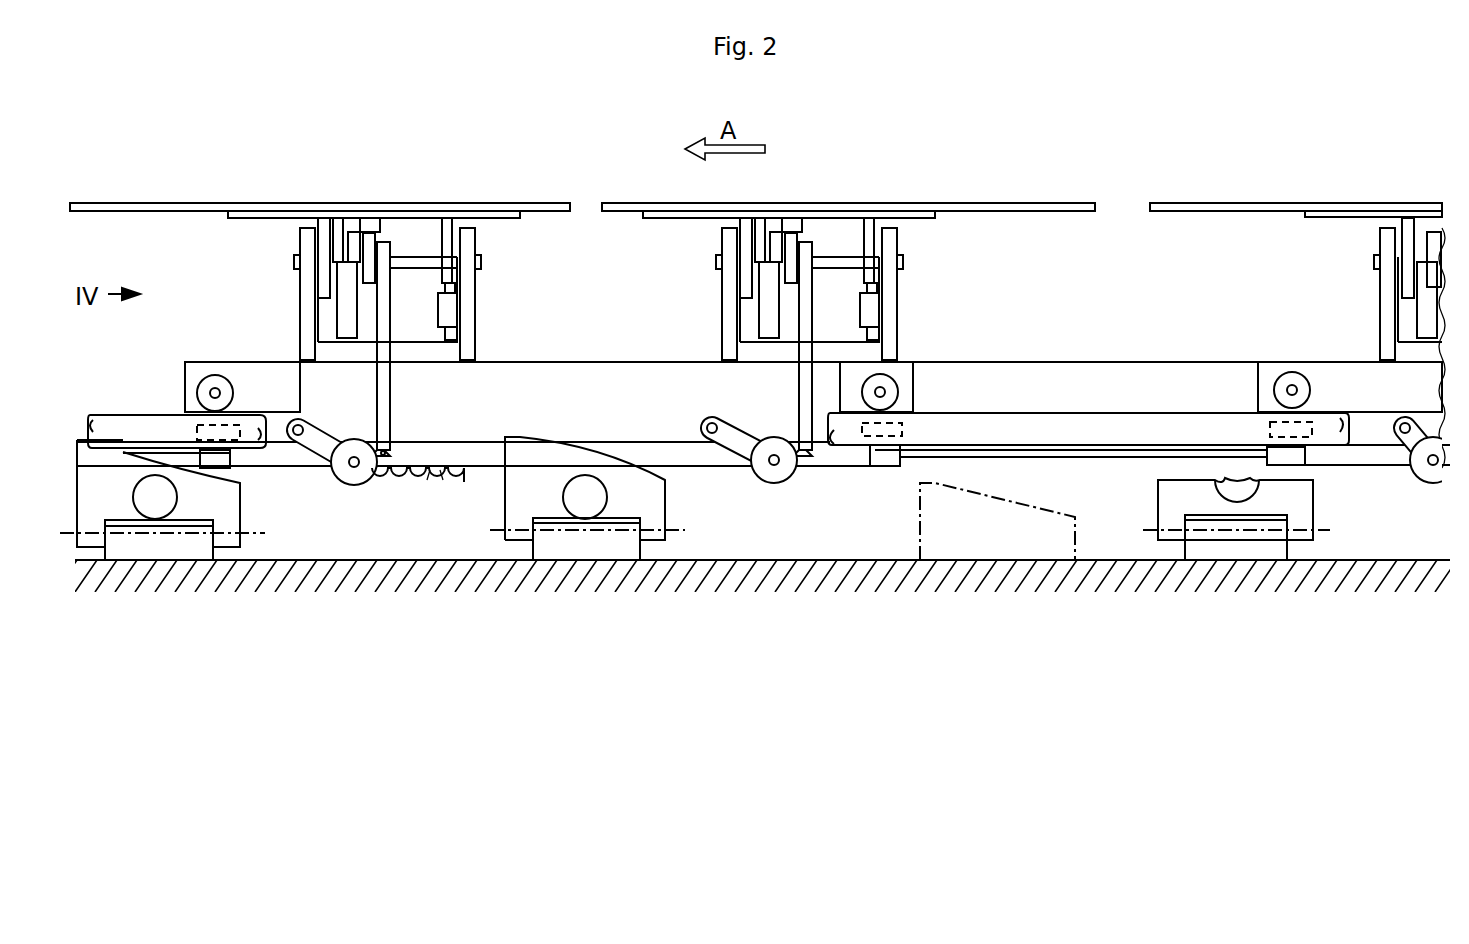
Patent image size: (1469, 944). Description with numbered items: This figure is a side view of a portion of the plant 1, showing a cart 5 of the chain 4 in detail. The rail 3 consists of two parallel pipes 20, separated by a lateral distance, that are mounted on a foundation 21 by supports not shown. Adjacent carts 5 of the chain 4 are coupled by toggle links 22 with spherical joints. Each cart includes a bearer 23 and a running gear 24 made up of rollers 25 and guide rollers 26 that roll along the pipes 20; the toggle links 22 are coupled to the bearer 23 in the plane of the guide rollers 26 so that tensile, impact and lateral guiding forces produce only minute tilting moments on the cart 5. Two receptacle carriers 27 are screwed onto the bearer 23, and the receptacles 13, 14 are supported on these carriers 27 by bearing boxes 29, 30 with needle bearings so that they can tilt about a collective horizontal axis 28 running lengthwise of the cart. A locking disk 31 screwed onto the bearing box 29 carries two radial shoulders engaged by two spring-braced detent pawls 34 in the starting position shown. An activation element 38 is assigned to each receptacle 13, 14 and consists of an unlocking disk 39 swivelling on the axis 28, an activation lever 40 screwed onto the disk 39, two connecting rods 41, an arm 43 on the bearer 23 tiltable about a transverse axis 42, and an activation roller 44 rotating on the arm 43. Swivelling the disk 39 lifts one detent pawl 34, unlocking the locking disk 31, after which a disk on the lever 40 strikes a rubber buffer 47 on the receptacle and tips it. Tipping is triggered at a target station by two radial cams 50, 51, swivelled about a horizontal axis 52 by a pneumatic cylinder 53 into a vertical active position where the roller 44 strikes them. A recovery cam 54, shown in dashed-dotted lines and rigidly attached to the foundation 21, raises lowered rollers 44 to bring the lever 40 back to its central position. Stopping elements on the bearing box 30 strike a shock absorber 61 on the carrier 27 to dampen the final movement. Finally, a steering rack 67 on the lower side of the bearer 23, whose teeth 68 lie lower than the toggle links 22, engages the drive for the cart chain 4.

The plant 1 is at (477, 103).
The rail 3 is at (112, 402).
The chain 4 is at (1129, 125).
The cart 5 is at (1150, 330).
The receptacle 13 is at (182, 203).
The receptacle 14 is at (1035, 203).
The pipe 20 is at (152, 428).
The foundation 21 is at (790, 558).
The toggle link 22 is at (1125, 460).
The bearer 23 is at (598, 378).
The running gear 24 is at (912, 358).
The roller 25 is at (213, 388).
The guide roller 26 is at (188, 405).
The receptacle carrier 27 is at (468, 336).
The horizontal axis 28 is at (295, 258).
The bearing box 29 is at (320, 228).
The bearing box 30 is at (449, 228).
The locking disk 31 is at (337, 240).
The detent pawl 34 is at (342, 308).
The activation element 38 is at (330, 392).
The unlocking disk 39 is at (360, 250).
The activation lever 40 is at (372, 273).
The connecting rod 41 is at (385, 332).
The transverse axis 42 is at (285, 410).
The arm 43 is at (318, 458).
The activation roller 44 is at (350, 478).
The rubber buffer 47 is at (381, 230).
The radial cam 50 is at (247, 512).
The radial cam 51 is at (658, 505).
The horizontal axis 52 is at (250, 532).
The pneumatic cylinder 53 is at (175, 494).
The recovery cam 54 is at (1025, 520).
The shock absorber 61 is at (452, 290).
The steering rack 67 is at (393, 486).
The tooth 68 is at (438, 486).